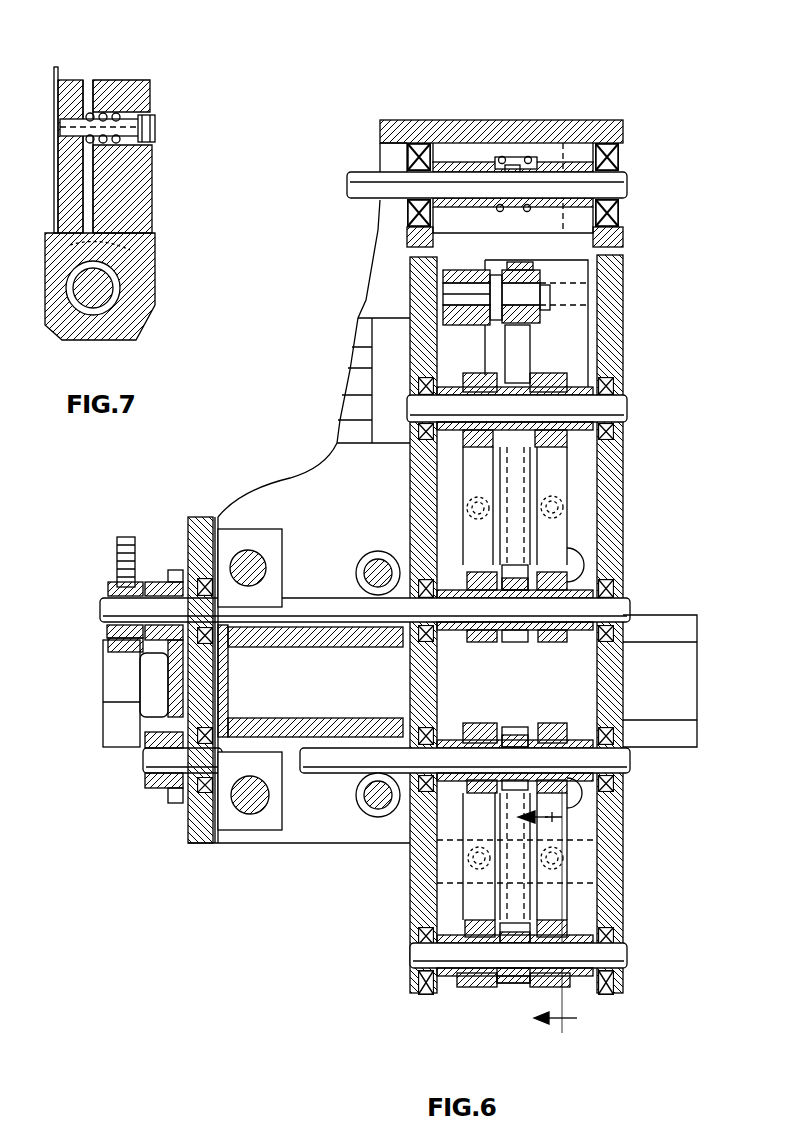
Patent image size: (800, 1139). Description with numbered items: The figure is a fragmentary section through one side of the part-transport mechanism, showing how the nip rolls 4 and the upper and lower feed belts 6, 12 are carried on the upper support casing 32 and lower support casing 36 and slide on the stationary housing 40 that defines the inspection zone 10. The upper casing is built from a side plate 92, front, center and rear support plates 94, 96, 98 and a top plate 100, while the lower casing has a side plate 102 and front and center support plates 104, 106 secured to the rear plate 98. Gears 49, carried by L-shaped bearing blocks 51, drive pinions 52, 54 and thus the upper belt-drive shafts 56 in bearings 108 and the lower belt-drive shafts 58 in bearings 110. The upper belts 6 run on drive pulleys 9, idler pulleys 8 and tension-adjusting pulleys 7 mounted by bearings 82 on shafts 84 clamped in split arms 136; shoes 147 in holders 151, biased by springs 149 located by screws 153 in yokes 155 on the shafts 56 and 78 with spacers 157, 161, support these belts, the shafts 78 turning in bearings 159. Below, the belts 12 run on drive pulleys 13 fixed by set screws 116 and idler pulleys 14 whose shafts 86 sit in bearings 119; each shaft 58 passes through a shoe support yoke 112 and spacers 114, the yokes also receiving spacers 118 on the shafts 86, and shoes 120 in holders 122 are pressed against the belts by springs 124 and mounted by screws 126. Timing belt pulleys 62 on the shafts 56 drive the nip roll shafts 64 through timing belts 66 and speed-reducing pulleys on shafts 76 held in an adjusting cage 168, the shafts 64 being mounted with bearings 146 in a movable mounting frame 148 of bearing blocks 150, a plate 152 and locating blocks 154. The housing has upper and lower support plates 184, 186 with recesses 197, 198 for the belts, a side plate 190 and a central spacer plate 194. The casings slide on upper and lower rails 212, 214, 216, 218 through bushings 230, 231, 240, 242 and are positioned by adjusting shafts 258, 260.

In FIG. 6, the nip rolls 4 is at (505, 157).
In FIG. 6, the upper feed belts 6 is at (531, 362).
In FIG. 6, the tension-adjusting pulleys 7 is at (533, 270).
In FIG. 6, the idler pulleys 8 is at (580, 376).
In FIG. 6, the drive pulleys 9 is at (510, 642).
In FIG. 6, the inspection zone 10 is at (417, 671).
In FIG. 7, the lower feed belts 12 is at (53, 183).
In FIG. 6, the lower feed belts 12 is at (512, 986).
In FIG. 6, the drive pulleys 13 is at (510, 727).
In FIG. 6, the idler pulleys 14 is at (513, 922).
In FIG. 6, the upper support casing 32 is at (453, 118).
In FIG. 6, the lower support casing 36 is at (406, 908).
In FIG. 6, the housing 40 is at (700, 612).
In FIG. 6, the gears 49 is at (165, 684).
In FIG. 6, the bearing blocks 51 is at (106, 745).
In FIG. 6, the pinions 52 is at (170, 570).
In FIG. 6, the pinions 54 is at (170, 804).
In FIG. 6, the upper belt-drive shafts 56 is at (326, 598).
In FIG. 6, the lower belt-drive shafts 58 is at (322, 772).
In FIG. 6, the timing belt pulleys 62 is at (108, 650).
In FIG. 6, the nip roll shafts 64 is at (630, 186).
In FIG. 6, the timing belts 66 is at (114, 562).
In FIG. 6, the shafts 76 is at (362, 397).
In FIG. 6, the shafts 78 is at (630, 412).
In FIG. 6, the bearings 82 is at (536, 323).
In FIG. 6, the shafts 84 is at (412, 292).
In FIG. 7, the shafts 86 is at (104, 316).
In FIG. 6, the shafts 86 is at (628, 960).
In FIG. 6, the side plate 92 is at (310, 505).
In FIG. 6, the front support plate 94 is at (624, 318).
In FIG. 6, the center support plate 96 is at (412, 492).
In FIG. 6, the rear support plate 98 is at (200, 540).
In FIG. 6, the top plate 100 is at (574, 130).
In FIG. 6, the side plate 102 is at (302, 845).
In FIG. 6, the front support plate 104 is at (628, 928).
In FIG. 6, the center support plate 106 is at (418, 918).
In FIG. 6, the bearings 108 is at (232, 665).
In FIG. 6, the bearings 110 is at (628, 722).
In FIG. 7, the shoe support yoke 112 is at (152, 268).
In FIG. 6, the shoe support yoke 112 is at (478, 723).
In FIG. 6, the spacers 114 is at (588, 728).
In FIG. 6, the set screws 116 is at (548, 725).
In FIG. 6, the spacers 118 is at (442, 985).
In FIG. 6, the bearings 119 is at (612, 988).
In FIG. 7, the shoes 120 is at (60, 74).
In FIG. 6, the shoes 120 is at (560, 908).
In FIG. 7, the holders 122 is at (96, 80).
In FIG. 6, the holders 122 is at (600, 824).
In FIG. 7, the springs 124 is at (118, 142).
In FIG. 6, the springs 124 is at (470, 852).
In FIG. 7, the screws 126 is at (154, 126).
In FIG. 6, the screws 126 is at (440, 878).
In FIG. 6, the split arms 136 is at (447, 272).
In FIG. 6, the bearings 146 is at (620, 160).
In FIG. 6, the shoes 147 is at (570, 532).
In FIG. 6, the mounting frames 148 is at (398, 240).
In FIG. 6, the springs 149 is at (570, 505).
In FIG. 6, the bearing blocks 150 is at (620, 230).
In FIG. 6, the holders 151 is at (420, 484).
In FIG. 6, the plate 152 is at (469, 219).
In FIG. 6, the screws 153 is at (572, 492).
In FIG. 6, the locating blocks 154 is at (541, 143).
In FIG. 6, the yokes 155 is at (480, 640).
In FIG. 6, the spacers 157 is at (590, 640).
In FIG. 6, the bearings 159 is at (620, 388).
In FIG. 6, the spacers 161 is at (606, 380).
In FIG. 6, the adjusting cage 168 is at (335, 452).
In FIG. 6, the upper support plate 184 is at (650, 612).
In FIG. 6, the lower support plate 186 is at (660, 748).
In FIG. 6, the side plate 190 is at (698, 692).
In FIG. 6, the central spacer plate 194 is at (230, 714).
In FIG. 6, the recess 197 is at (402, 648).
In FIG. 6, the recess 198 is at (402, 718).
In FIG. 6, the upper rails 212 is at (630, 572).
In FIG. 6, the lower rails 214 is at (628, 795).
In FIG. 6, the upper rail 216 is at (264, 566).
In FIG. 6, the lower rail 218 is at (250, 818).
In FIG. 6, the bushings 230 is at (582, 537).
In FIG. 6, the bushings 231 is at (600, 856).
In FIG. 6, the bushings 240 is at (246, 528).
In FIG. 6, the bushings 242 is at (262, 832).
In FIG. 6, the adjusting shaft 258 is at (374, 552).
In FIG. 6, the adjusting shaft 260 is at (380, 810).